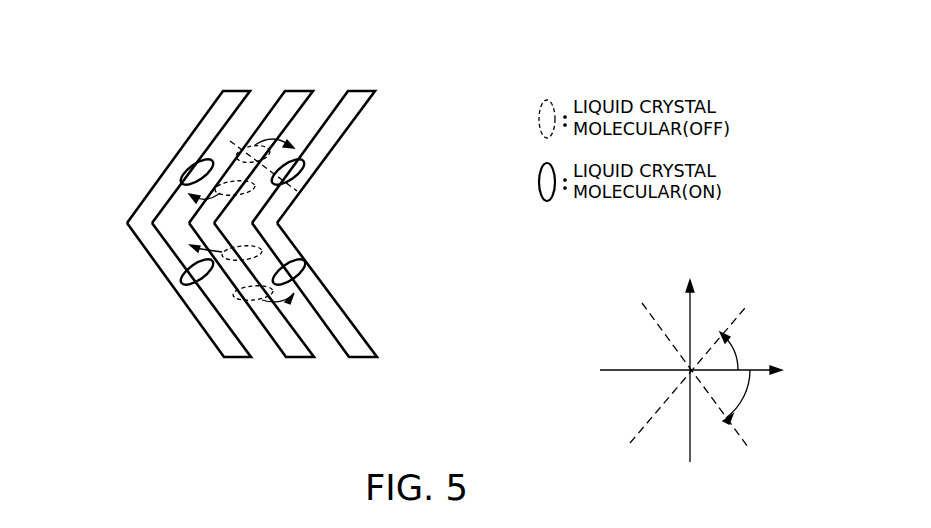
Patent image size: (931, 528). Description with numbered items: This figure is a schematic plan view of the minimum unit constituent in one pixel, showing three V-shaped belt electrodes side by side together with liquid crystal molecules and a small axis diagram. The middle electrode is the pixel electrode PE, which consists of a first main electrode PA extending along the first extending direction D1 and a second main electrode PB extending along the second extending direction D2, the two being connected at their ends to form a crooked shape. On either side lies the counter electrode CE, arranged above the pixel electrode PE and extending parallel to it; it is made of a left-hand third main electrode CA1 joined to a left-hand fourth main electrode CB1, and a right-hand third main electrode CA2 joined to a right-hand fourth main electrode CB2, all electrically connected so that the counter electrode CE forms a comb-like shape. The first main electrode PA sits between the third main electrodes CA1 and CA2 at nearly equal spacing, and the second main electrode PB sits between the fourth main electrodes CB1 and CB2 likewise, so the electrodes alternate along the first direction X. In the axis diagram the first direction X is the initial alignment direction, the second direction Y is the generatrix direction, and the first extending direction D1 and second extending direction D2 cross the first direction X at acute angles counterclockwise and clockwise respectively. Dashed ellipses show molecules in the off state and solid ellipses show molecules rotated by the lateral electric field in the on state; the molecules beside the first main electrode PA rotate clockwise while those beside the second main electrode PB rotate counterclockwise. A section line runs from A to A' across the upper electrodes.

The counter electrode CE is at (238, 80).
The pixel electrode PE is at (302, 80).
The third main electrode CA1 is at (155, 193).
The third main electrode CA2 is at (342, 123).
The fourth main electrode CB1 is at (222, 333).
The fourth main electrode CB2 is at (350, 332).
The first main electrode PA is at (282, 112).
The second main electrode PB is at (298, 349).
The section line start point A is at (232, 142).
The section line end point A' is at (318, 207).
The first direction X is at (700, 371).
The second direction Y is at (689, 359).
The first extending direction D1 is at (738, 318).
The second extending direction D2 is at (742, 432).